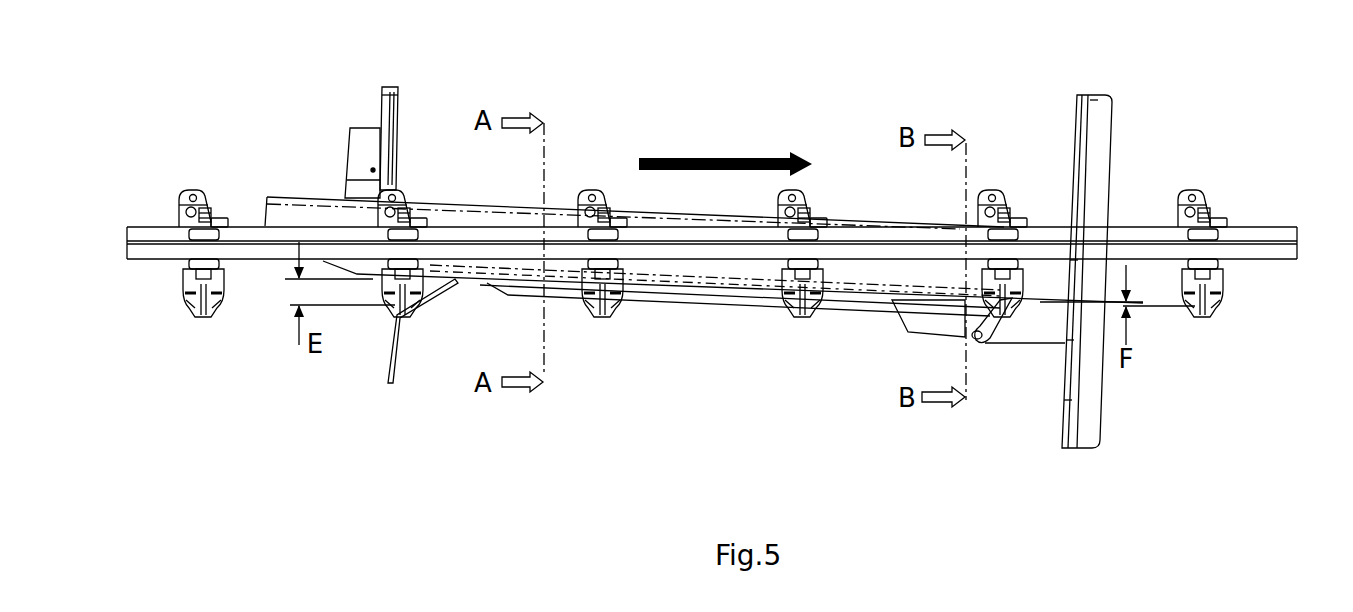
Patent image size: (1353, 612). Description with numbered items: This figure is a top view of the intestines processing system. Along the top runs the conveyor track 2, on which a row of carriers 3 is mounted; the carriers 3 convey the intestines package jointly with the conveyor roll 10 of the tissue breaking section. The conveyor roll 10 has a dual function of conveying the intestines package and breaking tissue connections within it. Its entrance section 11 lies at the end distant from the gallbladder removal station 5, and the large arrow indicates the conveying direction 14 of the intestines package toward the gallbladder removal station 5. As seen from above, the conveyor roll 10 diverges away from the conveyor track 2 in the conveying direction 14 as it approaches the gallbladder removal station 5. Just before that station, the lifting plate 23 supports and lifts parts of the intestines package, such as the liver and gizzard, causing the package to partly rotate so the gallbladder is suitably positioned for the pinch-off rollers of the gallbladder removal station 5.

The conveyor track 2 is at (240, 226).
The carrier 3 is at (181, 276).
The gallbladder removal station 5 is at (1008, 355).
The conveyor roll 10 is at (471, 194).
The entrance section 11 is at (366, 332).
The conveying direction 14 is at (747, 153).
The lifting plate 23 is at (934, 324).